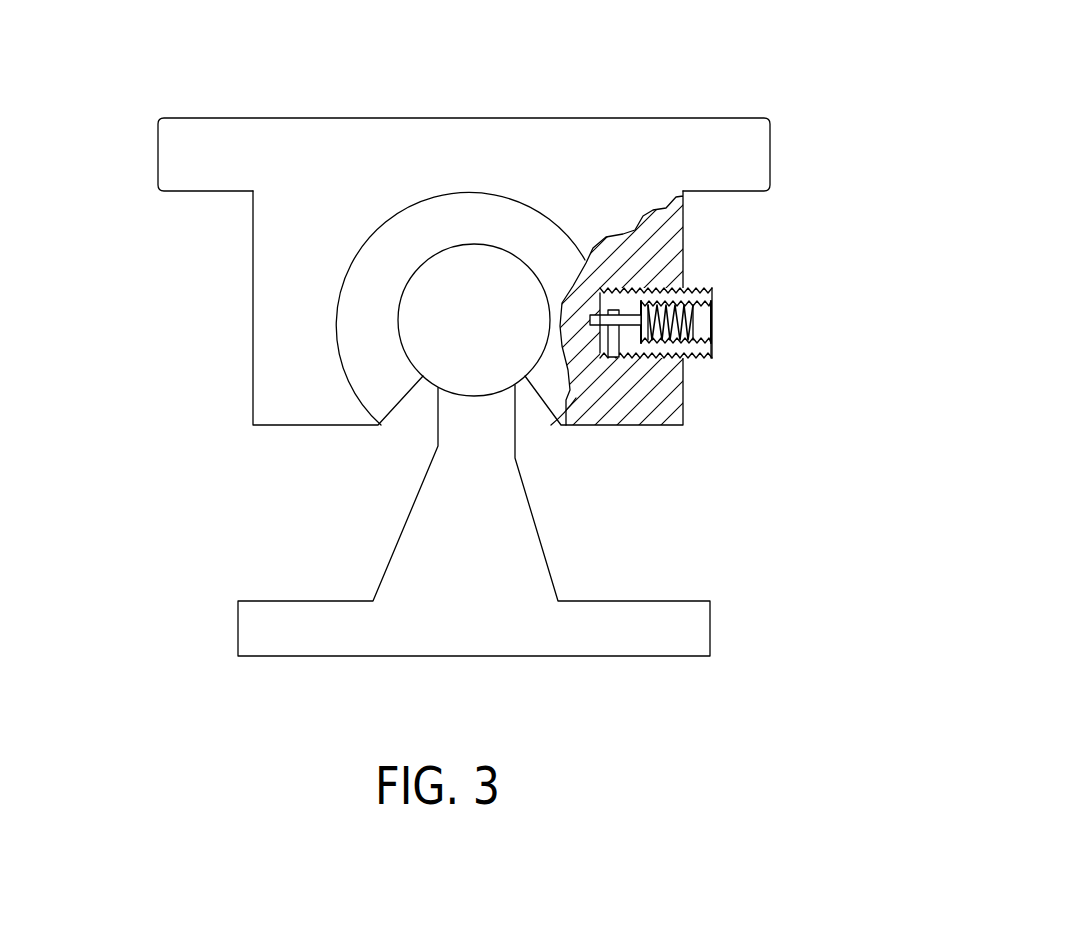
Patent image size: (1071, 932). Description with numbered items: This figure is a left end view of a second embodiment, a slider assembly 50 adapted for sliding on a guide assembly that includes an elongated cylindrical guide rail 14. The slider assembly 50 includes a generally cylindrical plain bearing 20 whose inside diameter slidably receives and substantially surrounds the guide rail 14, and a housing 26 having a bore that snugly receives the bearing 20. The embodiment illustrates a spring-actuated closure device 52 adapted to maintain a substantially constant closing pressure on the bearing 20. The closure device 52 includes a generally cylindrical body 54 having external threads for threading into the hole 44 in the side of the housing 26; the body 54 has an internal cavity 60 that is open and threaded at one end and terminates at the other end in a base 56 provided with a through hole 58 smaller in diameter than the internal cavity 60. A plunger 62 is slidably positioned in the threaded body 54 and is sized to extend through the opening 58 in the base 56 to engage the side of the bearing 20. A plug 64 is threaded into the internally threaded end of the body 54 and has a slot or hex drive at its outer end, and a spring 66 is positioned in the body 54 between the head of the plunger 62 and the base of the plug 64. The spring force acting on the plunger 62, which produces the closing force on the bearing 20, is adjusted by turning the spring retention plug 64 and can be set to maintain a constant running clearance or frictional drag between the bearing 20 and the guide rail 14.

The slider assembly 50 is at (606, 84).
The housing 26 is at (154, 157).
The plain bearing 20 is at (342, 299).
The guide rail 14 is at (402, 343).
The through hole 58 is at (687, 230).
The hole 44 is at (640, 287).
The spring 66 is at (665, 290).
The spring-actuated closure device 52 is at (734, 272).
The internal cavity 60 is at (696, 326).
The plug 64 is at (715, 332).
The cylindrical body 54 is at (712, 360).
The base 56 is at (632, 345).
The plunger 62 is at (613, 358).